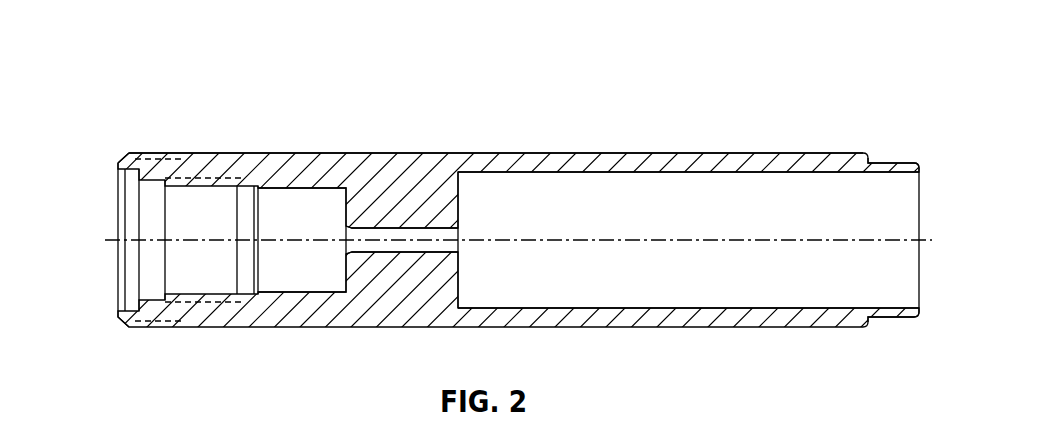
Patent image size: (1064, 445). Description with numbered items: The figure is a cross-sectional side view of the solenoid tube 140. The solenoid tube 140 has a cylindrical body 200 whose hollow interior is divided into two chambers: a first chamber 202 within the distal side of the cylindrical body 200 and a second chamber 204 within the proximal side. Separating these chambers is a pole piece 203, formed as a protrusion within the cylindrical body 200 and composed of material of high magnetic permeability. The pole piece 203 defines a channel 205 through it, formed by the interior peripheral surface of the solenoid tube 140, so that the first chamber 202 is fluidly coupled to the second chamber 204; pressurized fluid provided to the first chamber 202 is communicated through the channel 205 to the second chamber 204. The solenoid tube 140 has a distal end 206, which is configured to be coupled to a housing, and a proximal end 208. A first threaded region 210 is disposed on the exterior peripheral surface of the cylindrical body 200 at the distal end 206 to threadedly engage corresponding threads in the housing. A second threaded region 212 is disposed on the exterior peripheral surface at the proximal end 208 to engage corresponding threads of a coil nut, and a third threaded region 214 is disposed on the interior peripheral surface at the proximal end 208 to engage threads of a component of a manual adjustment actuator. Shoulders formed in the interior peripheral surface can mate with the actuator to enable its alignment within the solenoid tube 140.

The solenoid tube 140 is at (121, 52).
The cylindrical body 200 is at (588, 162).
The first chamber 202 is at (650, 180).
The pole piece 203 is at (416, 185).
The second chamber 204 is at (315, 212).
The channel 205 is at (373, 224).
The distal end 206 is at (829, 140).
The proximal end 208 is at (181, 114).
The first threaded region 210 is at (908, 156).
The second threaded region 212 is at (140, 151).
The third threaded region 214 is at (237, 185).